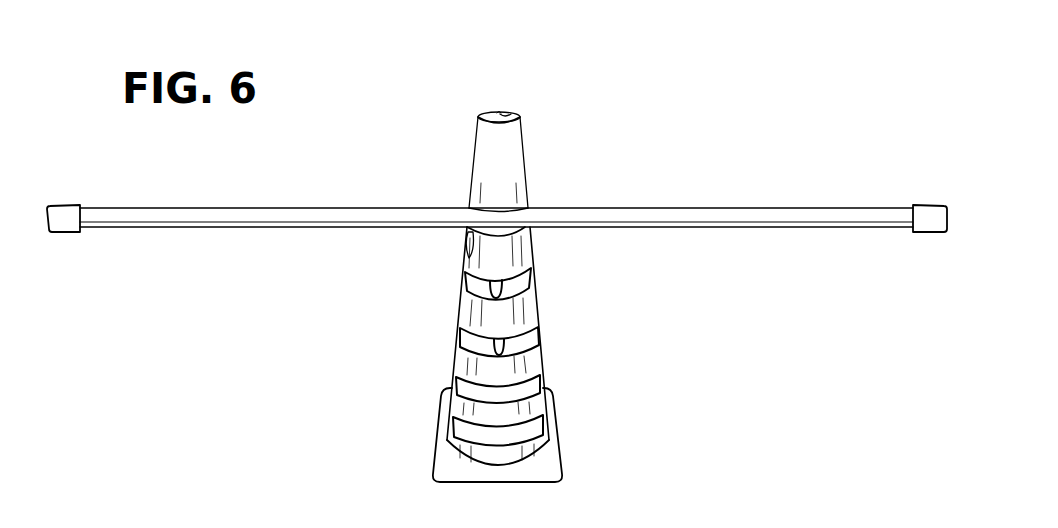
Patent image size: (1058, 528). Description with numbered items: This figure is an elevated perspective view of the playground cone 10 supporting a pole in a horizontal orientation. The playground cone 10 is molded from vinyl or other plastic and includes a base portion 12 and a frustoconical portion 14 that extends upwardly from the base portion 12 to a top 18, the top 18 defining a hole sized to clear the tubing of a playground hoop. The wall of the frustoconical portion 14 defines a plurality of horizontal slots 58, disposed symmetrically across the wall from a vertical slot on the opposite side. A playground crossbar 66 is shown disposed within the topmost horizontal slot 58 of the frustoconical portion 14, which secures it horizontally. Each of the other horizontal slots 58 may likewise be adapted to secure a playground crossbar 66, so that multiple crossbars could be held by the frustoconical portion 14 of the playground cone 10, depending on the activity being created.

The playground cone 10 is at (492, 264).
The base portion 12 is at (440, 460).
The frustoconical portion 14 is at (490, 170).
The top 18 is at (510, 110).
The horizontal slot 58 is at (472, 250).
The playground crossbar 66 is at (703, 217).